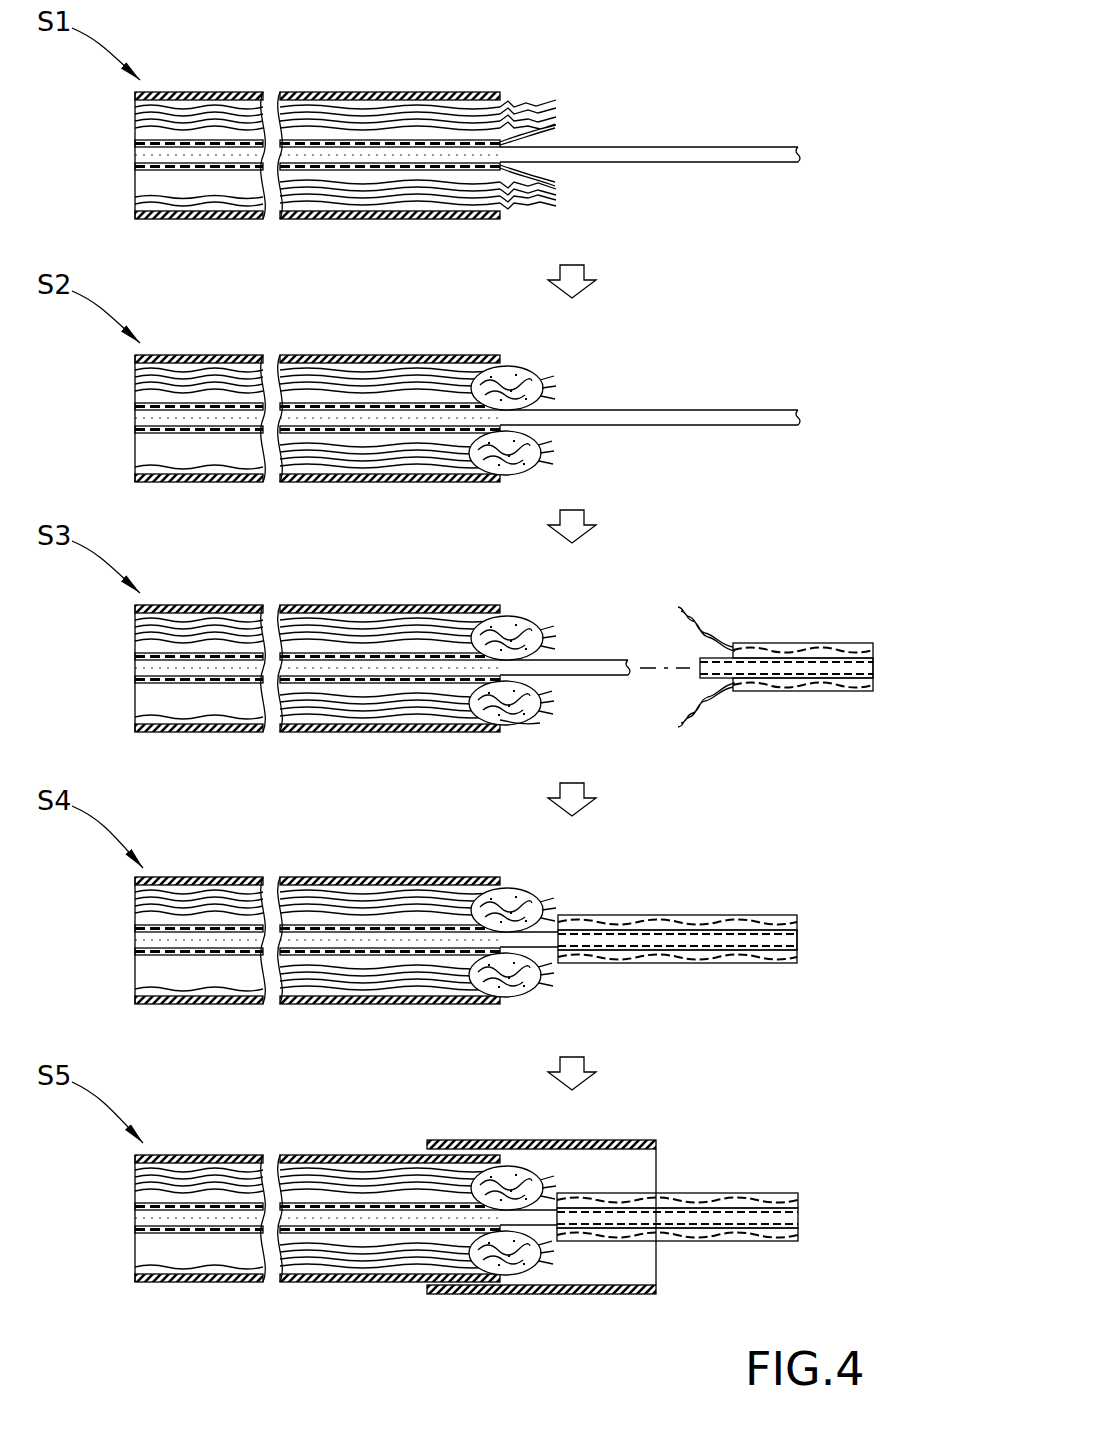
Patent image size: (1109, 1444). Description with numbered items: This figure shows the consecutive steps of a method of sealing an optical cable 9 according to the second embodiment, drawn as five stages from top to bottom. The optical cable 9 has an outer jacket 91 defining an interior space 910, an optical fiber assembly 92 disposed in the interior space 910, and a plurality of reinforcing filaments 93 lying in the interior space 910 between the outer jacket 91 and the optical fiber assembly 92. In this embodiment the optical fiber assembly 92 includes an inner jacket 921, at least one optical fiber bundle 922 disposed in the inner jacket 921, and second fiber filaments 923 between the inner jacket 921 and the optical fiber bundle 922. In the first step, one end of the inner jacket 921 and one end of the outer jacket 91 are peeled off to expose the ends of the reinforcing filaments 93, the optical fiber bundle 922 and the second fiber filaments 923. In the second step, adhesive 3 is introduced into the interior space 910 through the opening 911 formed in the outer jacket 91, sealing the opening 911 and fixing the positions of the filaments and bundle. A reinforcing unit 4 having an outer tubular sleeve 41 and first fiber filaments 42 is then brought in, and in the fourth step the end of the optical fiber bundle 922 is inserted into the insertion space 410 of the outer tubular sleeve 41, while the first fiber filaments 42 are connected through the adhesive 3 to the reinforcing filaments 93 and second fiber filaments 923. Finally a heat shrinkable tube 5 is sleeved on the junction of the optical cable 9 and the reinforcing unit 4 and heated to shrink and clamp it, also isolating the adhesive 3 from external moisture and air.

The adhesive 3 is at (533, 401).
The reinforcing unit 4 is at (801, 641).
The outer tubular sleeve 41 is at (786, 610).
The first fiber filaments 42 is at (788, 650).
The insertion space 410 is at (898, 708).
The heat shrinkable tube 5 is at (541, 1253).
The optical cable 9 is at (310, 0).
The outer jacket 91 is at (478, 0).
The interior space 910 is at (154, 195).
The opening 911 is at (87, 155).
The optical fiber assembly 92 is at (702, 53).
The inner jacket 921 is at (418, 214).
The optical fiber bundle 922 is at (317, 209).
The second fiber filaments 923 is at (358, 71).
The reinforcing filaments 93 is at (400, 20).